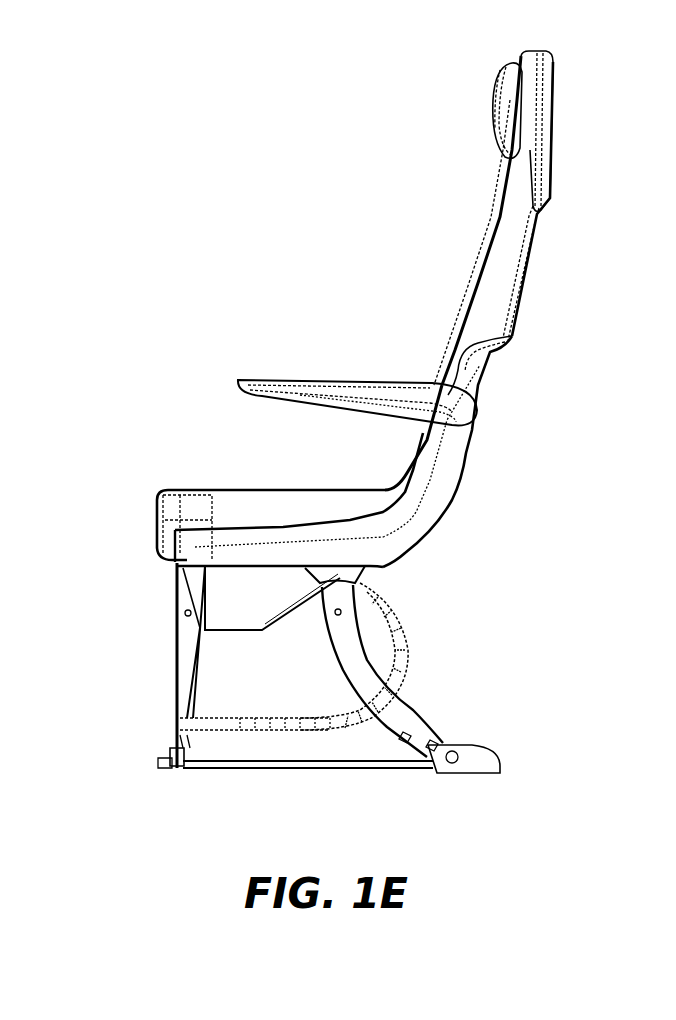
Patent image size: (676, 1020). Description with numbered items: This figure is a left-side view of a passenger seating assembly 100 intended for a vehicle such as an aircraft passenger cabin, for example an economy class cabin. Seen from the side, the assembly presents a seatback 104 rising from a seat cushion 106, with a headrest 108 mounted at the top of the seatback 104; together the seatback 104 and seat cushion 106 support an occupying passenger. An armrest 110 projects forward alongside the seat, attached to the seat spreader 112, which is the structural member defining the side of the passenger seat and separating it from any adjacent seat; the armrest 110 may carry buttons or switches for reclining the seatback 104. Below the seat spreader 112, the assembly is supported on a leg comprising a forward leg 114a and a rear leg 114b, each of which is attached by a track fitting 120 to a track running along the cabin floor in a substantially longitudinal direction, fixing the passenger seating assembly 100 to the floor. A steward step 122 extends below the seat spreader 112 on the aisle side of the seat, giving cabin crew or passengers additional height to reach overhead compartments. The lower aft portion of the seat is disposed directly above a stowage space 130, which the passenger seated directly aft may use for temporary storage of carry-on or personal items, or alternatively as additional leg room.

The passenger seating assembly 100 is at (108, 113).
The seatback 104 is at (502, 280).
The seat cushion 106 is at (248, 508).
The headrest 108 is at (497, 111).
The armrest 110 is at (378, 398).
The seat spreader 112 is at (410, 508).
The forward leg 114a is at (185, 697).
The rear leg 114b is at (400, 717).
The track fitting 120 is at (163, 760).
The steward step 122 is at (262, 631).
The stowage space 130 is at (276, 681).